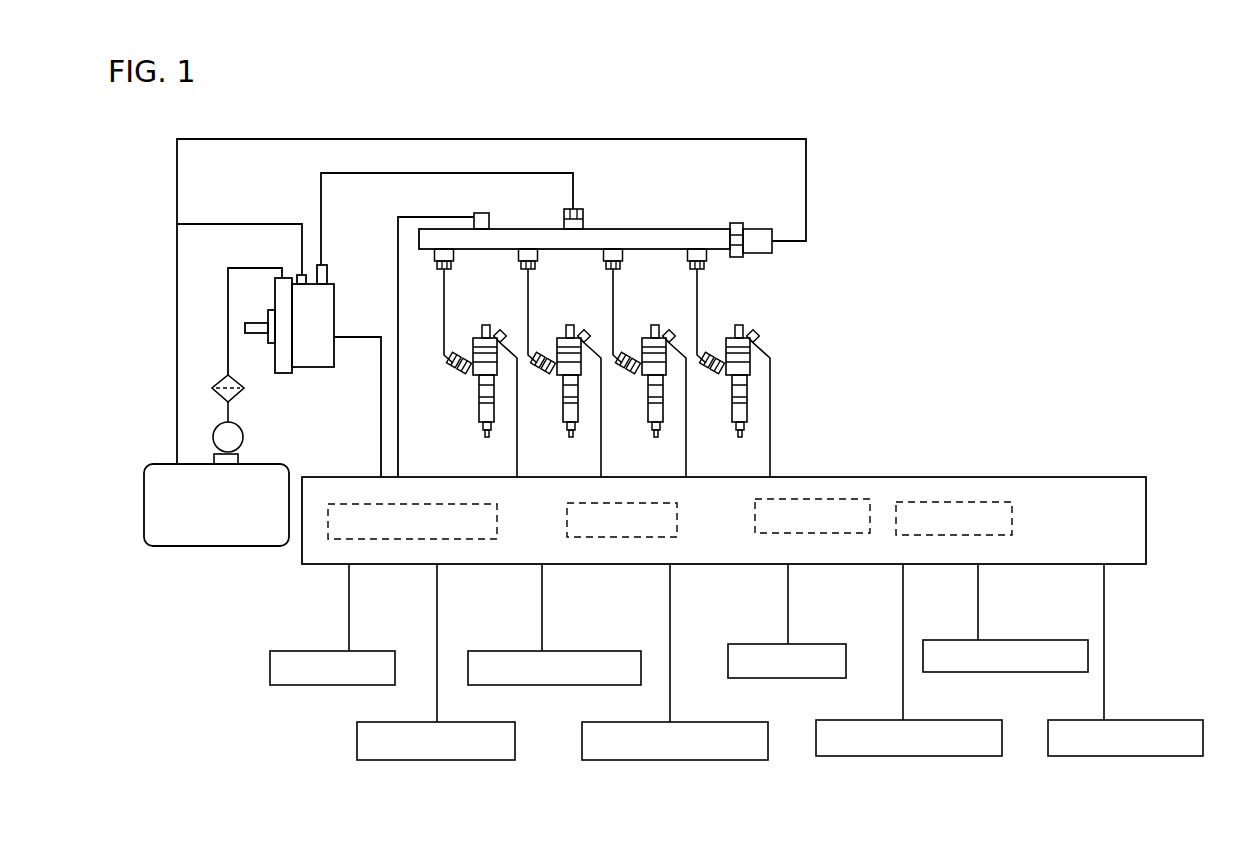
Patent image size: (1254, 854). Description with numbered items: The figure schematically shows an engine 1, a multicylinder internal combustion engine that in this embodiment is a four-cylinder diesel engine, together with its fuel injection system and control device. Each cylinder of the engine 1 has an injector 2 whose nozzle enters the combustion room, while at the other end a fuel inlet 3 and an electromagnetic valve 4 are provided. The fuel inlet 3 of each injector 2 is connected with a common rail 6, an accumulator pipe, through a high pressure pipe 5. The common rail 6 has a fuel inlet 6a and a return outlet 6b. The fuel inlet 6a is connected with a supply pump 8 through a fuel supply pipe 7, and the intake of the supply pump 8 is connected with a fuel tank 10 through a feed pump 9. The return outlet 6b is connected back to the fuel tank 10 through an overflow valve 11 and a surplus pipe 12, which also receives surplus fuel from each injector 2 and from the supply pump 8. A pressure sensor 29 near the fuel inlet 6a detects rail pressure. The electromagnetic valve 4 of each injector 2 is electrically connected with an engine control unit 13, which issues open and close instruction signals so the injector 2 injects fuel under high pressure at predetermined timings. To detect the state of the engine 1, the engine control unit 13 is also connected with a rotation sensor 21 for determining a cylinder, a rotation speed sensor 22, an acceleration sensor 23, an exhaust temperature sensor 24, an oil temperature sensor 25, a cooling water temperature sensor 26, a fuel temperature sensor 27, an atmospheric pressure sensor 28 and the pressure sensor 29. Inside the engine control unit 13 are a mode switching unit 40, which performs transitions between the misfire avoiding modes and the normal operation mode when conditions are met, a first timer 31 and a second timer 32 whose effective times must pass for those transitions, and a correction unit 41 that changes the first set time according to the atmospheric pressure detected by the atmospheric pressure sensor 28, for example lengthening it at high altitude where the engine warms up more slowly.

The engine 1 is at (899, 250).
The injector 2 is at (467, 400).
The fuel inlet 3 is at (452, 366).
The electromagnetic valve 4 is at (474, 338).
The high pressure pipe 5 is at (443, 326).
The common rail 6 is at (643, 235).
The fuel inlet 6a is at (584, 212).
The return outlet 6b is at (736, 222).
The fuel supply pipe 7 is at (379, 175).
The supply pump 8 is at (312, 352).
The feed pump 9 is at (238, 433).
The fuel tank 10 is at (198, 524).
The overflow valve 11 is at (760, 240).
The surplus pipe 12 is at (655, 139).
The engine control unit 13 is at (978, 478).
The rotation sensor 21 is at (296, 686).
The rotation speed sensor 22 is at (433, 761).
The acceleration sensor 23 is at (553, 686).
The exhaust temperature sensor 24 is at (671, 759).
The oil temperature sensor 25 is at (798, 679).
The cooling water temperature sensor 26 is at (935, 757).
The fuel temperature sensor 27 is at (1038, 673).
The atmospheric pressure sensor 28 is at (1113, 757).
The pressure sensor 29 is at (492, 215).
The first timer 31 is at (806, 499).
The second timer 32 is at (926, 498).
The mode switching unit 40 is at (407, 540).
The correction unit 41 is at (615, 538).